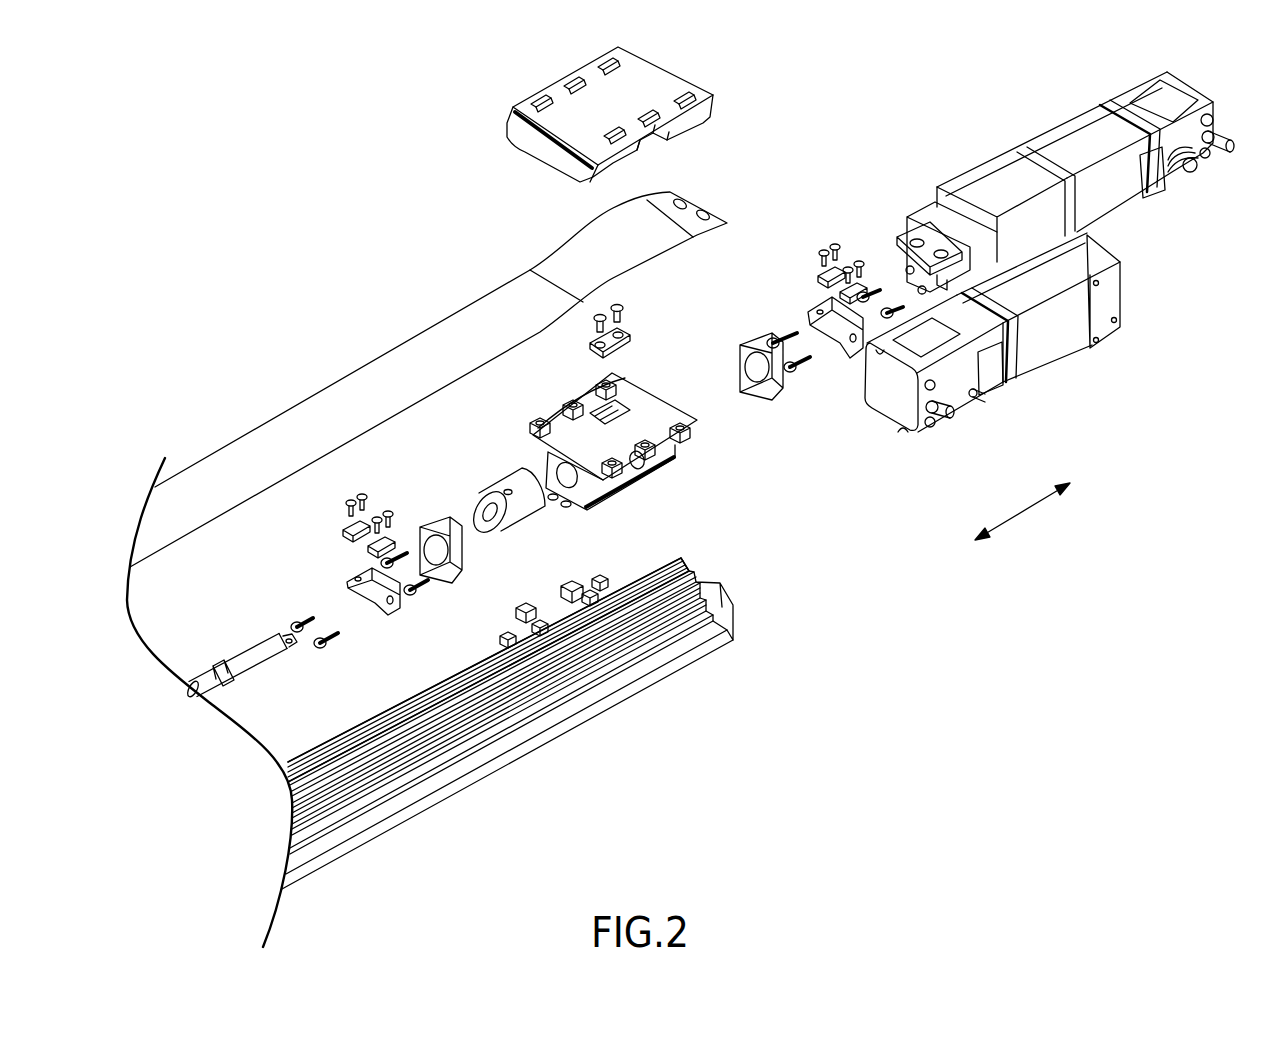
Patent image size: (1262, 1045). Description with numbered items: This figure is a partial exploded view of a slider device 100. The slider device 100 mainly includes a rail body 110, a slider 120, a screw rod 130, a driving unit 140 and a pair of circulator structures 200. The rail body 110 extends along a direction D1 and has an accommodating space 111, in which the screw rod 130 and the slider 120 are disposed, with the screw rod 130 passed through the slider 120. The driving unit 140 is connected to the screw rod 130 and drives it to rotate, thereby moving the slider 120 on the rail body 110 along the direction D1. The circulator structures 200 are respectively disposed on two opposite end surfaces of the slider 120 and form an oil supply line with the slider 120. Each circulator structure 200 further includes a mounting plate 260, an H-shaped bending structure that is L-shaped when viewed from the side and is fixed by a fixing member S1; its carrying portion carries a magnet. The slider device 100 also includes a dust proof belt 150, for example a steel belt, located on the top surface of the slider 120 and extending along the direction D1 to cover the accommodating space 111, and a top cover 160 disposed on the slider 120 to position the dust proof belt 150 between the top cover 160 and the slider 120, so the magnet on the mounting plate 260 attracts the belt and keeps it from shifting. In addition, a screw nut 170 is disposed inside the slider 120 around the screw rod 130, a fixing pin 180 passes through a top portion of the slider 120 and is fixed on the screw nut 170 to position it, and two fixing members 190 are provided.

The slider device 100 is at (152, 206).
The rail body 110 is at (612, 698).
The accommodating space 111 is at (681, 592).
The slider 120 is at (648, 478).
The screw rod 130 is at (200, 688).
The driving unit 140 is at (1027, 128).
The dust proof belt 150 is at (348, 397).
The top cover 160 is at (643, 85).
The screw nut 170 is at (497, 497).
The fixing pin 180 is at (627, 347).
The fixing members 190 is at (615, 322).
The circulator structures 200 is at (440, 590).
The mounting plate 260 is at (395, 617).
The fixing member S1 is at (335, 630).
The direction D1 is at (1022, 514).